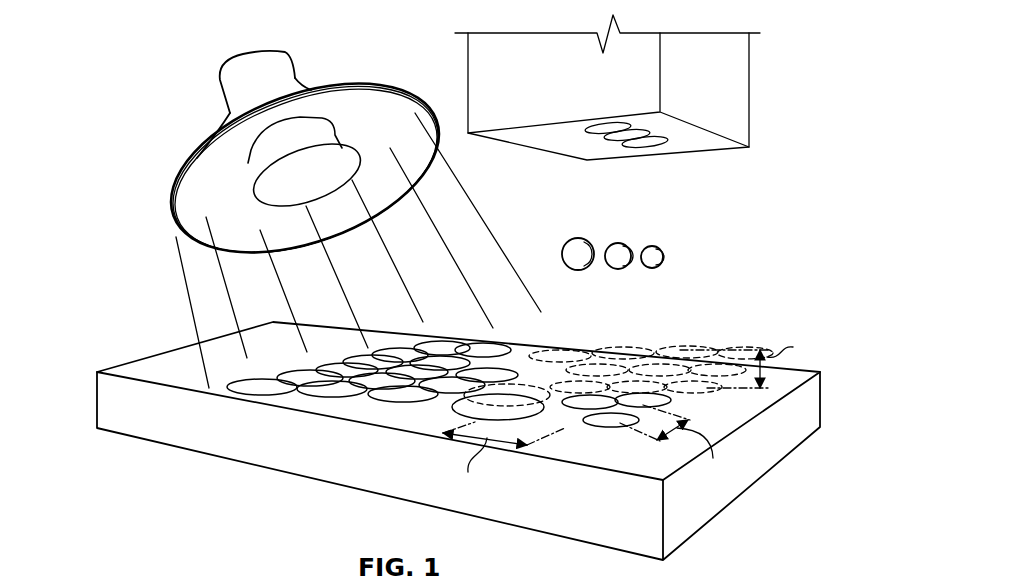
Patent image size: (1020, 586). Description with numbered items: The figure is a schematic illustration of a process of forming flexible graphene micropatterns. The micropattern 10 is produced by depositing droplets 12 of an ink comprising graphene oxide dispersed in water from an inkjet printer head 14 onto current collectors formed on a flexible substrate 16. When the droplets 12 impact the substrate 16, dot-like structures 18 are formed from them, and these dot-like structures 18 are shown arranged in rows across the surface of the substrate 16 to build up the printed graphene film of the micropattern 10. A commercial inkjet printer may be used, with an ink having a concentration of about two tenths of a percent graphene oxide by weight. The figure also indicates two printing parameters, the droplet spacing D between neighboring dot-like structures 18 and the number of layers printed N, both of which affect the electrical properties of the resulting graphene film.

The micropattern 10 is at (687, 308).
The droplets 12 is at (577, 240).
The inkjet printer head 14 is at (750, 78).
The flexible substrate 16 is at (302, 468).
The dot-like structures 18 is at (570, 357).